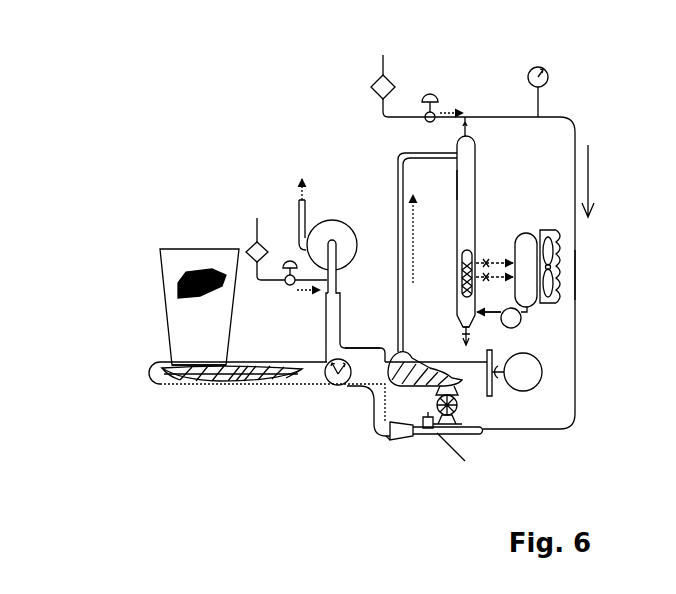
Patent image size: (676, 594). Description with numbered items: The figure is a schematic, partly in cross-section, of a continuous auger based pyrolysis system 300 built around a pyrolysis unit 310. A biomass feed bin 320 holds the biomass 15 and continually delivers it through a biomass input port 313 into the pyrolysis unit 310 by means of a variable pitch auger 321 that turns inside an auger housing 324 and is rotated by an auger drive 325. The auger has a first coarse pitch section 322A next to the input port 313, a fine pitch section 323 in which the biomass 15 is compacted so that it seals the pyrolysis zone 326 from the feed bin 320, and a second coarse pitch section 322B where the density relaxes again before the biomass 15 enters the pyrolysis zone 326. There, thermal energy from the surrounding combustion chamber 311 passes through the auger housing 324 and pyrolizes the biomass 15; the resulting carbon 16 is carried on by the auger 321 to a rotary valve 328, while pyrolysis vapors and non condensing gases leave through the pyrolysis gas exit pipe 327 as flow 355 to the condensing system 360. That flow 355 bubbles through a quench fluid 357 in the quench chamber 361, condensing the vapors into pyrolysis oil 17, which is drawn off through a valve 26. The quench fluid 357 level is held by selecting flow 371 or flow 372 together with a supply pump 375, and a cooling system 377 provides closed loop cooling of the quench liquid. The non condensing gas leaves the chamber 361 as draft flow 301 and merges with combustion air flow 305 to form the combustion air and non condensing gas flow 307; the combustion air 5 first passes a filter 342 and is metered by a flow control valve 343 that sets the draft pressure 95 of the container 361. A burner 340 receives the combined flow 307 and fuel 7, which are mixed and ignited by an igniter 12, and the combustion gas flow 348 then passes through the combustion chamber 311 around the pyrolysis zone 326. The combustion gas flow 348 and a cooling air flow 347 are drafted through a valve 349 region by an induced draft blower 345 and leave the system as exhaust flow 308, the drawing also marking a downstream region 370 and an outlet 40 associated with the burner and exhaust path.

The system 300 is at (292, 128).
The combustion air 5 is at (388, 48).
The filter 342 is at (390, 81).
The flow control valve 343 is at (434, 93).
The combustion air flow 305 is at (452, 110).
The draft pressure 95 is at (556, 80).
The draft flow 301 is at (462, 132).
The condensing system 360 is at (484, 152).
The quench chamber 361 is at (474, 183).
The quench fluid 357 is at (473, 256).
The combustion air and non condensing gas flow 307 is at (592, 172).
The cooling region 370 is at (599, 275).
The exhaust flow 308 is at (298, 191).
The cooling air flow 347 is at (331, 213).
The induced draft blower 345 is at (311, 294).
The valve 349 is at (284, 287).
The biomass feed bin 320 is at (157, 262).
The biomass 15 is at (180, 289).
The biomass input port 313 is at (202, 355).
The auger housing 324 is at (148, 372).
The variable pitch auger 321 is at (237, 372).
The first coarse pitch section 322A is at (217, 380).
The fine pitch section 323 is at (257, 377).
The second coarse pitch section 322B is at (287, 373).
The combustion gas flow 348 is at (330, 385).
The pyrolysis unit 310 is at (312, 424).
The combustion chamber 311 is at (372, 396).
The pyrolysis zone 326 is at (349, 351).
The pyrolysis gas exit pipe 327 is at (400, 282).
The flow 355 is at (397, 349).
The carbon 16 is at (414, 378).
The pyrolysis oil 17 is at (461, 323).
The valve 26 is at (470, 333).
The auger drive 325 is at (543, 388).
The rotary valve 328 is at (468, 407).
The igniter 12 is at (426, 418).
The burner 340 is at (395, 442).
The fuel 7 is at (463, 449).
The outlet 40 is at (410, 455).
The cooling system 377 is at (528, 242).
The flow 371 is at (494, 253).
The flow 372 is at (494, 283).
The supply pump 375 is at (521, 322).